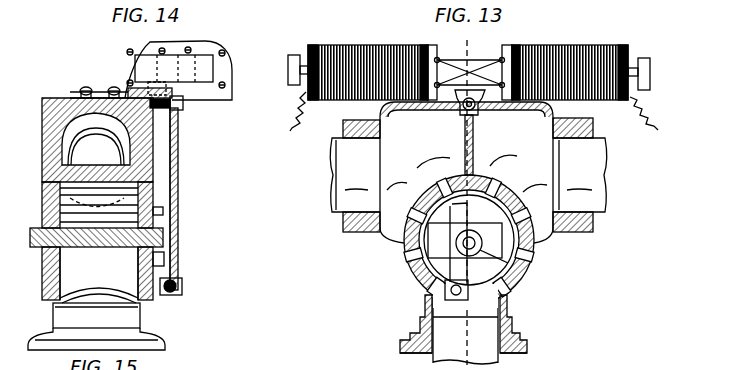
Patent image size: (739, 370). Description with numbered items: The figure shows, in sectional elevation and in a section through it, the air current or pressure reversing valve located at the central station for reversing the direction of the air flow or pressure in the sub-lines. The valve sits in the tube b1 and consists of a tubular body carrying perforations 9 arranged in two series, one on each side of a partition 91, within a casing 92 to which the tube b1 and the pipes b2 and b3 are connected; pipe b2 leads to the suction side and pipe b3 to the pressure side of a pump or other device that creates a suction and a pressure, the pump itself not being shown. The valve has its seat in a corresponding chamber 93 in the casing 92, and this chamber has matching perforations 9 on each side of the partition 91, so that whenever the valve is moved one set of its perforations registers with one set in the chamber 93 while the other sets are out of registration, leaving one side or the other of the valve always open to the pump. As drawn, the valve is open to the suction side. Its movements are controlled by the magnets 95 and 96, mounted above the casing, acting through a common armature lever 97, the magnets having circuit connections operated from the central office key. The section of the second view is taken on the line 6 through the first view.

In FIG. 13, the magnet 95 is at (358, 76).
In FIG. 14, the magnet 96 is at (179, 68).
In FIG. 13, the magnet 96 is at (585, 76).
In FIG. 13, the section line 6 is at (469, 202).
In FIG. 13, the casing 92 is at (389, 108).
In FIG. 13, the partition 91 is at (474, 124).
In FIG. 13, the pipe b2 is at (335, 190).
In FIG. 13, the pipe b3 is at (600, 197).
In FIG. 14, the chamber a is at (99, 273).
In FIG. 13, the chamber a is at (531, 270).
In FIG. 13, the chamber 93 is at (409, 268).
In FIG. 13, the perforations 9 is at (469, 247).
In FIG. 13, the armature lever 97 is at (420, 292).
In FIG. 13, the tube b1 is at (500, 363).